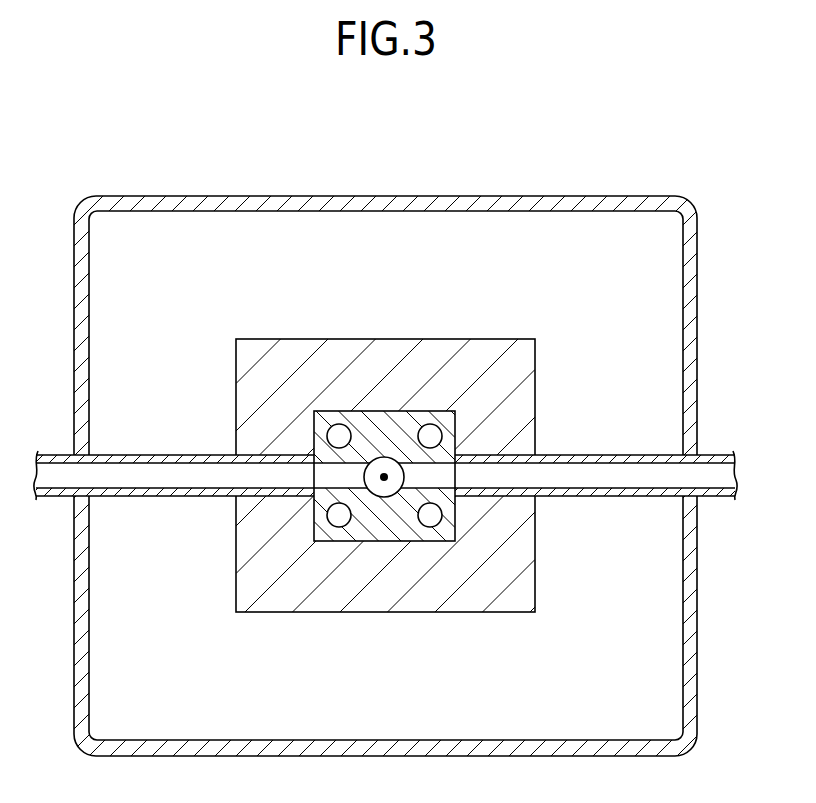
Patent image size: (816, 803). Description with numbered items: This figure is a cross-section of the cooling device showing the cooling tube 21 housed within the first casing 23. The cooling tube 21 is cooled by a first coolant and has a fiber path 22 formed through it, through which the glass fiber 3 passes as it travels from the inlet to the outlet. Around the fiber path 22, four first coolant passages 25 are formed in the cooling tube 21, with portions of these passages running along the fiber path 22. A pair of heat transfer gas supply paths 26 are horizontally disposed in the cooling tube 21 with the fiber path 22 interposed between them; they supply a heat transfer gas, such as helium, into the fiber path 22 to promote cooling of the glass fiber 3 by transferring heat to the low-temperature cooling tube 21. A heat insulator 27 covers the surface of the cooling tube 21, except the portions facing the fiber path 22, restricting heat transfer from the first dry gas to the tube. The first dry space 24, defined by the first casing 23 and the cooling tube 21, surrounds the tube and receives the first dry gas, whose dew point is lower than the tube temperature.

The glass fiber 3 is at (384, 477).
The cooling tube 21 is at (397, 537).
The fiber path 22 is at (393, 463).
The first casing 23 is at (357, 204).
The first dry space 24 is at (167, 339).
The first coolant passages 25 is at (339, 430).
The heat transfer gas supply paths 26 is at (443, 477).
The heat insulator 27 is at (500, 360).